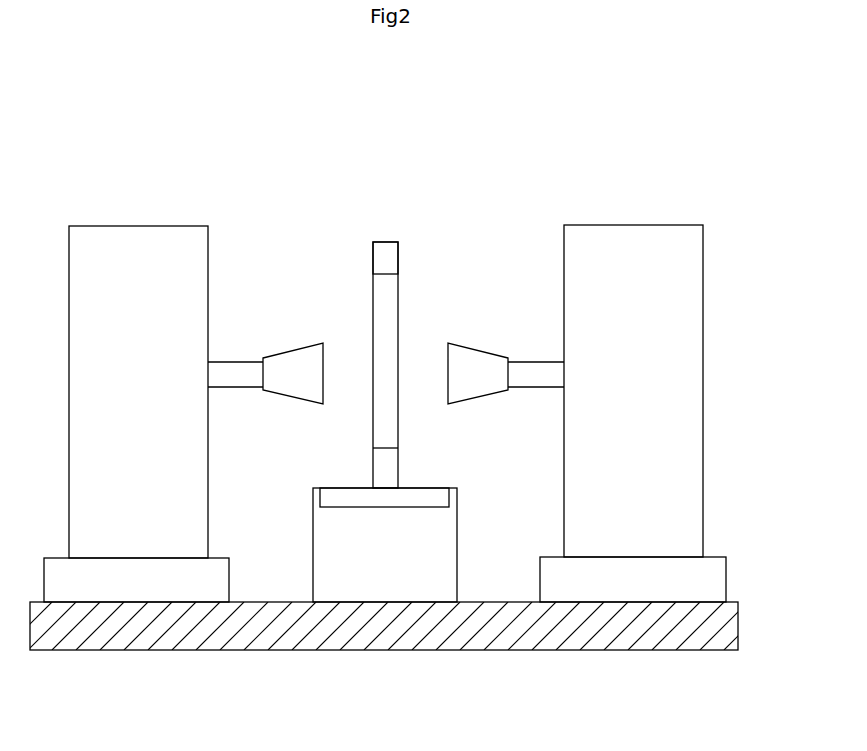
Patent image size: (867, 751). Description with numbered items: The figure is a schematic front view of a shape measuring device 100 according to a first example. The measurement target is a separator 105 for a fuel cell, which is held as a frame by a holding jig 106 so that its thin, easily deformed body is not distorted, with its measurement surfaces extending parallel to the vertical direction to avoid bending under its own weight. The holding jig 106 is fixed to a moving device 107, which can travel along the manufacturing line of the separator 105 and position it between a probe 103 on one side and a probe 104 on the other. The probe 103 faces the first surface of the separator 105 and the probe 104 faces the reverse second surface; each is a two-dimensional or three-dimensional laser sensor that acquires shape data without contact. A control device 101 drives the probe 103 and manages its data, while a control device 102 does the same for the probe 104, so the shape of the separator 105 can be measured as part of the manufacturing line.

The shape measuring device 100 is at (461, 114).
The control device 101 is at (177, 232).
The control device 102 is at (657, 230).
The probe 103 is at (295, 357).
The probe 104 is at (478, 355).
The separator 105 is at (378, 287).
The holding jig 106 is at (393, 255).
The moving device 107 is at (445, 546).